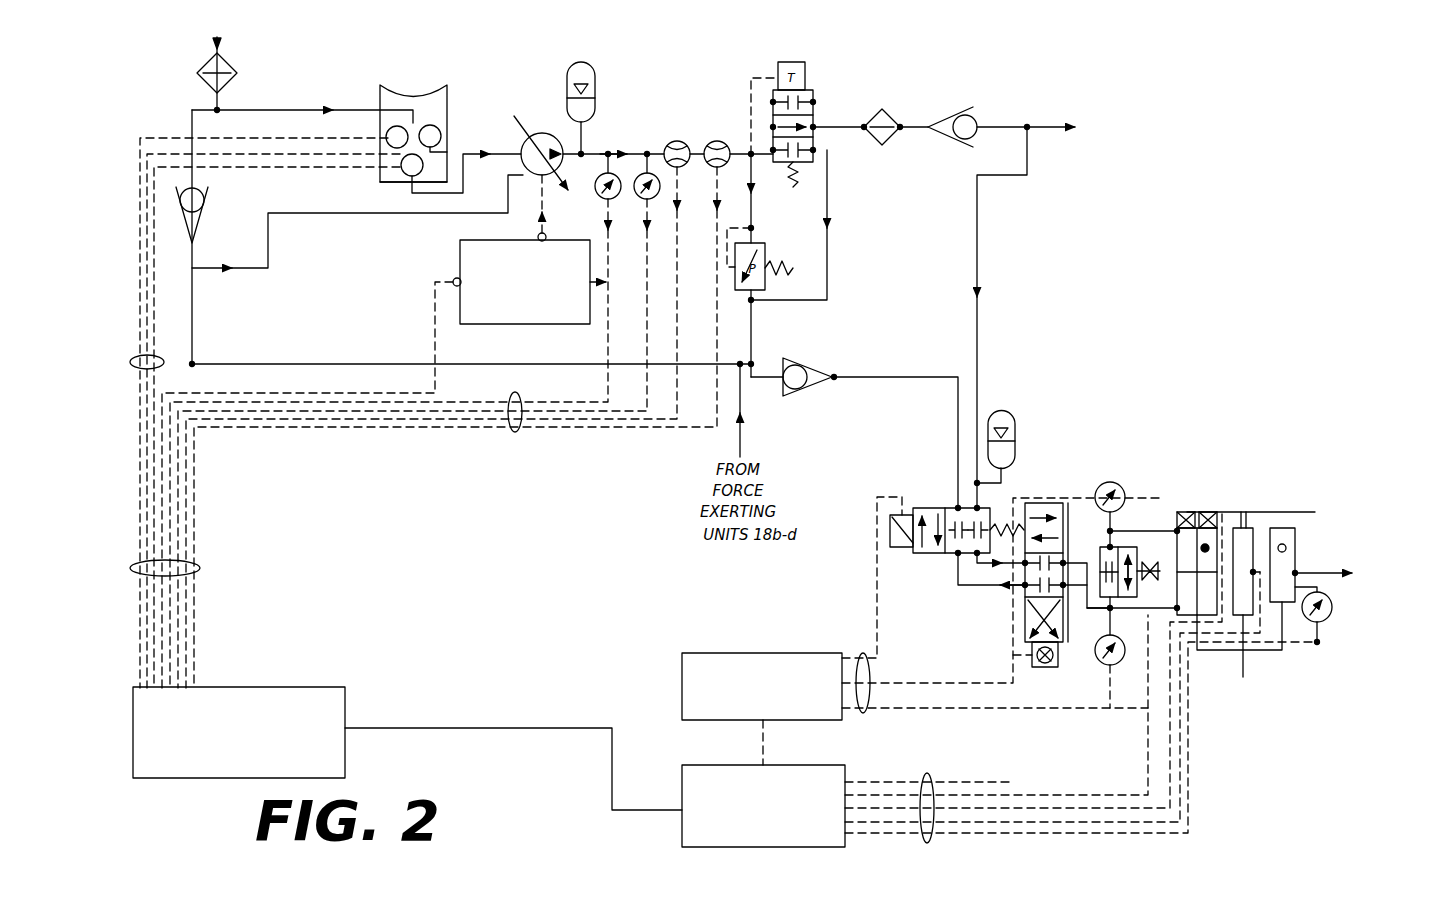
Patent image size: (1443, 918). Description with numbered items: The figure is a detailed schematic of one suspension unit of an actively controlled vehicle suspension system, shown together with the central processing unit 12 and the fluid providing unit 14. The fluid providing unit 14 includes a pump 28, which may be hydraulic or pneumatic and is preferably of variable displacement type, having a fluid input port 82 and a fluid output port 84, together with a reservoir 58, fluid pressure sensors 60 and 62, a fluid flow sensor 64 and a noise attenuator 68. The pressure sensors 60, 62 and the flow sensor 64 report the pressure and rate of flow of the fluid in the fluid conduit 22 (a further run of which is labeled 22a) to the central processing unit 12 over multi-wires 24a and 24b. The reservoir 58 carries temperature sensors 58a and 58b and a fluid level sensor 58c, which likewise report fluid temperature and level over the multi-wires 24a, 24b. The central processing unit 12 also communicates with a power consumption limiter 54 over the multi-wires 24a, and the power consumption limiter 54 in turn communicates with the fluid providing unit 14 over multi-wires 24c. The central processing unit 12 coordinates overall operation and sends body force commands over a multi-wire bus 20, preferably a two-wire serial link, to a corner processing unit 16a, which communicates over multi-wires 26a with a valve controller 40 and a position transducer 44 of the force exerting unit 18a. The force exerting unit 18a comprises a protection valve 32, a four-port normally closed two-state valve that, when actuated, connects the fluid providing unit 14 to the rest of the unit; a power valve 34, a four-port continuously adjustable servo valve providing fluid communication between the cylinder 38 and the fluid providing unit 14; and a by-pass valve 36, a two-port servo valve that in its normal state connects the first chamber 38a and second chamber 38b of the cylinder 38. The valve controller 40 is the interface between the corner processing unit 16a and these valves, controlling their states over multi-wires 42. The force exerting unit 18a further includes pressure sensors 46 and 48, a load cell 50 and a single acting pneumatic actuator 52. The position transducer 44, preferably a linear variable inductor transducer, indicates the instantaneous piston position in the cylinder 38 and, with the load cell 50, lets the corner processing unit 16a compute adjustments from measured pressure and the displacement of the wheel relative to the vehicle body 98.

The central processing unit 12 is at (262, 687).
The fluid providing unit 14 is at (527, 60).
The corner processing unit 16a is at (710, 765).
The force exerting unit 18a is at (1102, 430).
The multi-wire bus 20 is at (480, 728).
The fluid conduit 22 is at (990, 127).
The hydraulic branch line 22a is at (985, 327).
The multi-wires 24a is at (200, 568).
The multi-wires 24b is at (164, 360).
The multi-wires 24c is at (532, 215).
The multi-wires 26a is at (765, 745).
The pump 28 is at (541, 133).
The protection valve 32 is at (932, 553).
The power valve 34 is at (1058, 667).
The by-pass valve 36 is at (1101, 548).
The cylinder 38 is at (1166, 519).
The first chamber 38a is at (1172, 540).
The second chamber 38b is at (1172, 605).
The valve controller 40 is at (765, 653).
The multi-wires 42 is at (870, 672).
The position transducer 44 is at (1238, 512).
The pressure sensor 46 is at (1118, 487).
The pressure sensor 48 is at (1115, 666).
The load cell 50 is at (1212, 510).
The single acting pneumatic actuator 52 is at (1297, 540).
The power consumption limiter 54 is at (525, 325).
The reservoir 58 is at (447, 92).
The temperature sensor 58a is at (380, 96).
The temperature sensor 58b is at (438, 125).
The fluid level sensor 58c is at (403, 175).
The fluid pressure sensor 60 is at (598, 198).
The fluid pressure sensor 62 is at (646, 199).
The fluid flow sensor 64 is at (718, 140).
The noise attenuator 68 is at (597, 100).
The fluid input port 82 is at (463, 188).
The fluid output port 84 is at (592, 150).
The vehicle body 98 is at (1284, 512).